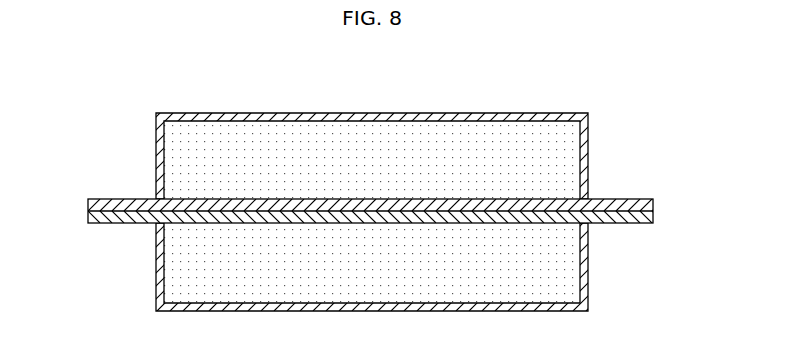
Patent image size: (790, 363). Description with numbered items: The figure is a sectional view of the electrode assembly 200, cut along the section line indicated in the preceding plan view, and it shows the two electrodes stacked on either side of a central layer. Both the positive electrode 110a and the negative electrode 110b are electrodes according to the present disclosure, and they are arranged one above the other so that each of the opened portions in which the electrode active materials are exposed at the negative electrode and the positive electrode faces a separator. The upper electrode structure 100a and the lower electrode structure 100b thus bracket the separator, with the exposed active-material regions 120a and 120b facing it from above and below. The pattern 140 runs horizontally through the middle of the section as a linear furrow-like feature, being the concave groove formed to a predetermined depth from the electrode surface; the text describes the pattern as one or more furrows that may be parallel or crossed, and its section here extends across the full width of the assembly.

The electrode assembly 200 is at (392, 93).
The positive electrode 100a is at (395, 212).
The negative electrode 100b is at (395, 212).
The positive electrode 110a is at (160, 172).
The negative electrode 110b is at (160, 252).
The first electrode assembly 120a is at (177, 143).
The second electrode assembly 120b is at (178, 280).
The pattern 140 is at (97, 213).